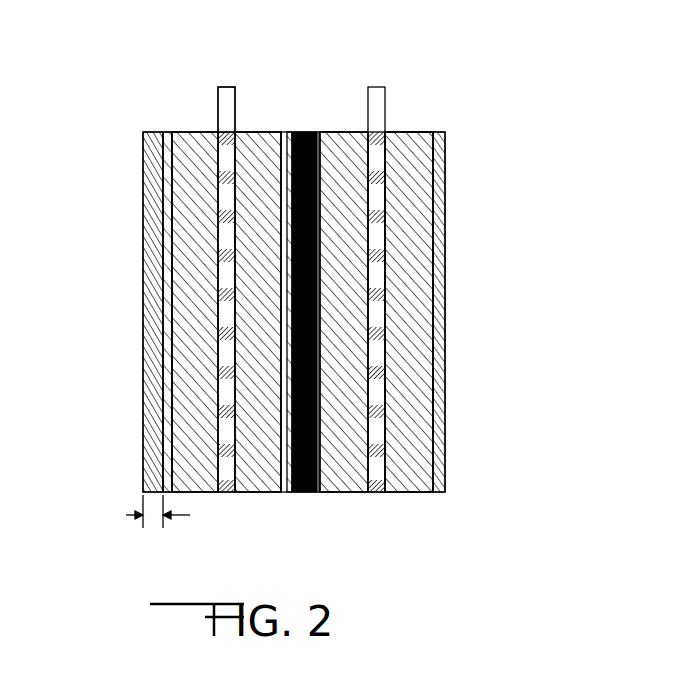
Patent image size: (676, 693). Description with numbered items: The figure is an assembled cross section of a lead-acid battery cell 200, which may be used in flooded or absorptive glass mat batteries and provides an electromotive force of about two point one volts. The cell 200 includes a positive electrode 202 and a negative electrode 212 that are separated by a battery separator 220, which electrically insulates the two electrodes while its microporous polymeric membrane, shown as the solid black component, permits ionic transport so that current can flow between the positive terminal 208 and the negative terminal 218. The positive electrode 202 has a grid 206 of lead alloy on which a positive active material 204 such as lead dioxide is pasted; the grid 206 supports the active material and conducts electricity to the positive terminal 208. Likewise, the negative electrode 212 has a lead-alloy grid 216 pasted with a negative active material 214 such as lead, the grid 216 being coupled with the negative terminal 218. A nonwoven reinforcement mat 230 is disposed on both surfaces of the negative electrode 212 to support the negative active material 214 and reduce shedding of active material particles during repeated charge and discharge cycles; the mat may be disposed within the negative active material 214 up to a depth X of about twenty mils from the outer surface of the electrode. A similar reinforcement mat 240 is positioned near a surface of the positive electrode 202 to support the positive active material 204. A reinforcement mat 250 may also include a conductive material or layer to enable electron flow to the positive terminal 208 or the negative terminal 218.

The lead-acid battery cell 200 is at (512, 133).
The positive electrode 202 is at (409, 82).
The positive active material 204 is at (342, 494).
The grid 206 is at (385, 222).
The positive terminal 208 is at (385, 110).
The negative electrode 212 is at (205, 77).
The negative active material 214 is at (202, 494).
The grid 216 is at (228, 253).
The negative terminal 218 is at (218, 110).
The battery separator 220 is at (302, 493).
The reinforcement mat 230 is at (167, 488).
The reinforcement mat 240 is at (447, 352).
The reinforcement mat 250 is at (282, 131).
The depth X is at (150, 523).